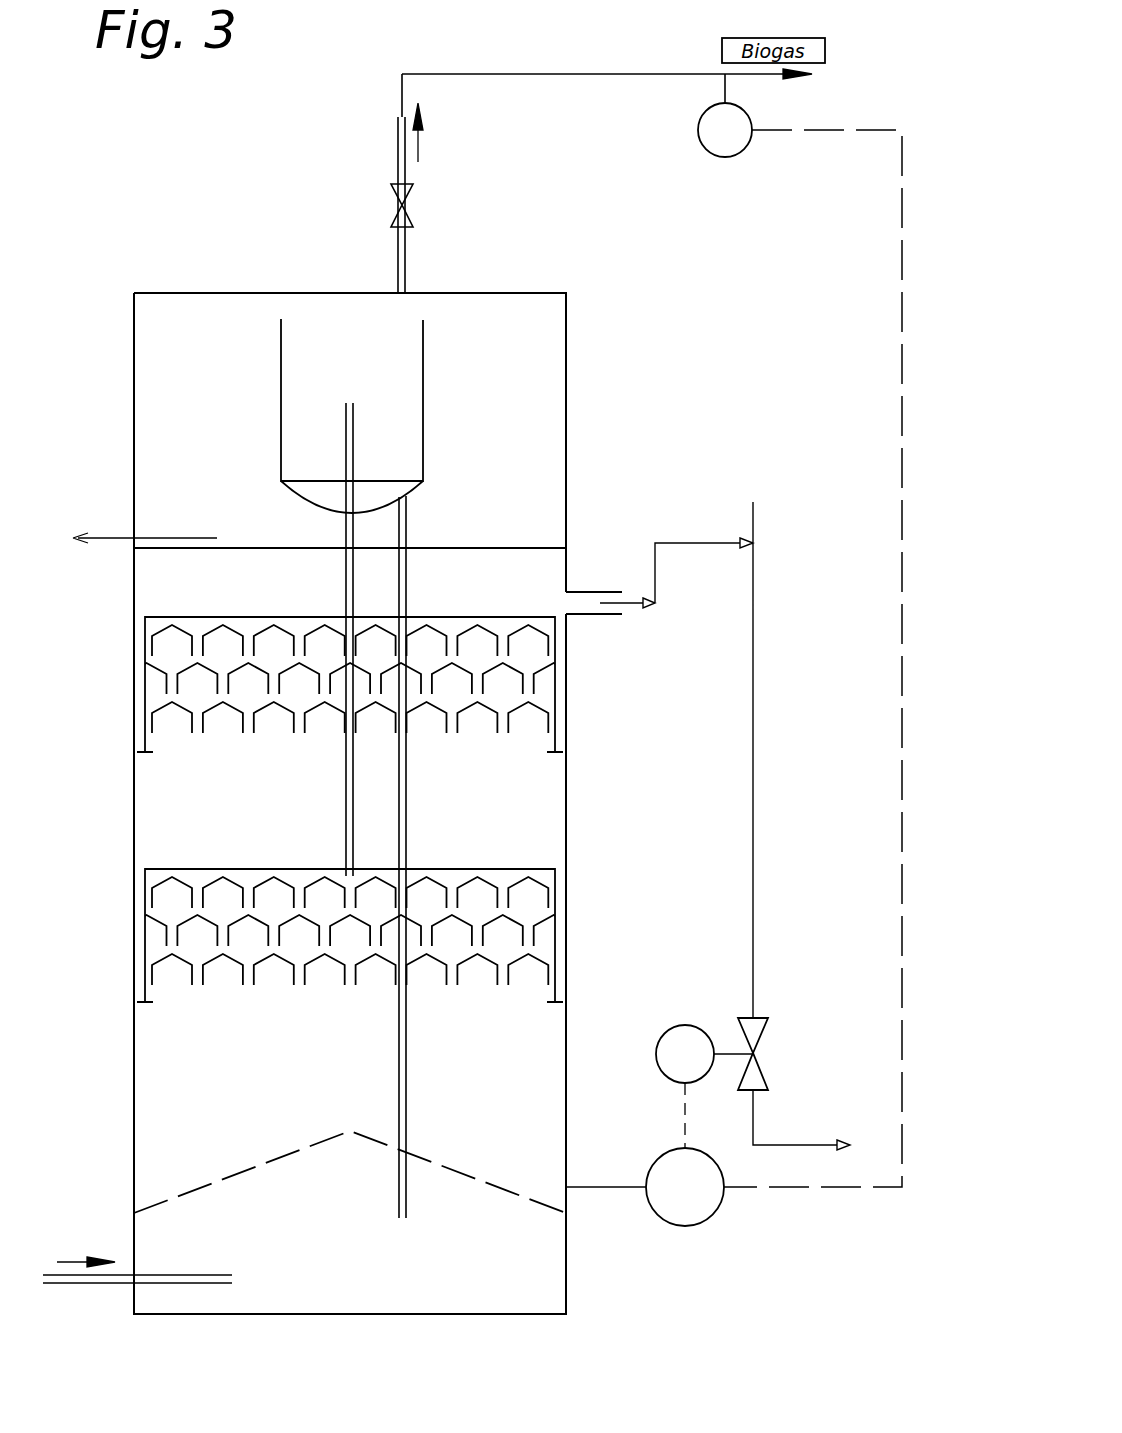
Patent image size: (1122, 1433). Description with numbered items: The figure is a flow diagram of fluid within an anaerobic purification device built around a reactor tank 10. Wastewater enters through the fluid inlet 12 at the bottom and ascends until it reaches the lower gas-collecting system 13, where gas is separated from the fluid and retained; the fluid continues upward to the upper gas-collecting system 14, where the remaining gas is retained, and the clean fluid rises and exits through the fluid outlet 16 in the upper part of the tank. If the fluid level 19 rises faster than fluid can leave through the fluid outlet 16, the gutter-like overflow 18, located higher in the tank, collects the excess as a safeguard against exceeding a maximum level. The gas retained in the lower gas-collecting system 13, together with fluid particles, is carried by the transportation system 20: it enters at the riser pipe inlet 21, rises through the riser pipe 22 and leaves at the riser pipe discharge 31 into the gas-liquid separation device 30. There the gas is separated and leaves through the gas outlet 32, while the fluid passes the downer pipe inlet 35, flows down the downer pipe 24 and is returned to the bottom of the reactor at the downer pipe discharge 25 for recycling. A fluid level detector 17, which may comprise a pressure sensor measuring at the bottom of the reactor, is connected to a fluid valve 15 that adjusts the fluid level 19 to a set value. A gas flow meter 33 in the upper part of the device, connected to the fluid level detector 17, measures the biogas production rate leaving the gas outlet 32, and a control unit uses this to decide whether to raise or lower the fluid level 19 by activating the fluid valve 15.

The reactor tank 10 is at (134, 1108).
The fluid inlet 12 is at (95, 1277).
The lower gas-collecting system 13 is at (200, 928).
The upper gas-collecting system 14 is at (197, 682).
The fluid valve 15 is at (750, 1033).
The fluid outlet 16 is at (693, 545).
The fluid level detector 17 is at (705, 1200).
The overflow 18 is at (183, 538).
The fluid level 19 is at (505, 548).
The transportation system 20 is at (310, 753).
The riser pipe inlet 21 is at (346, 868).
The riser pipe 22 is at (353, 800).
The downer pipe 24 is at (402, 1073).
The downer pipe discharge 25 is at (402, 1220).
The gas-liquid separation device 30 is at (378, 352).
The riser pipe discharge 31 is at (352, 513).
The gas outlet 32 is at (404, 291).
The gas flow meter 33 is at (733, 139).
The downer pipe inlet 35 is at (408, 497).